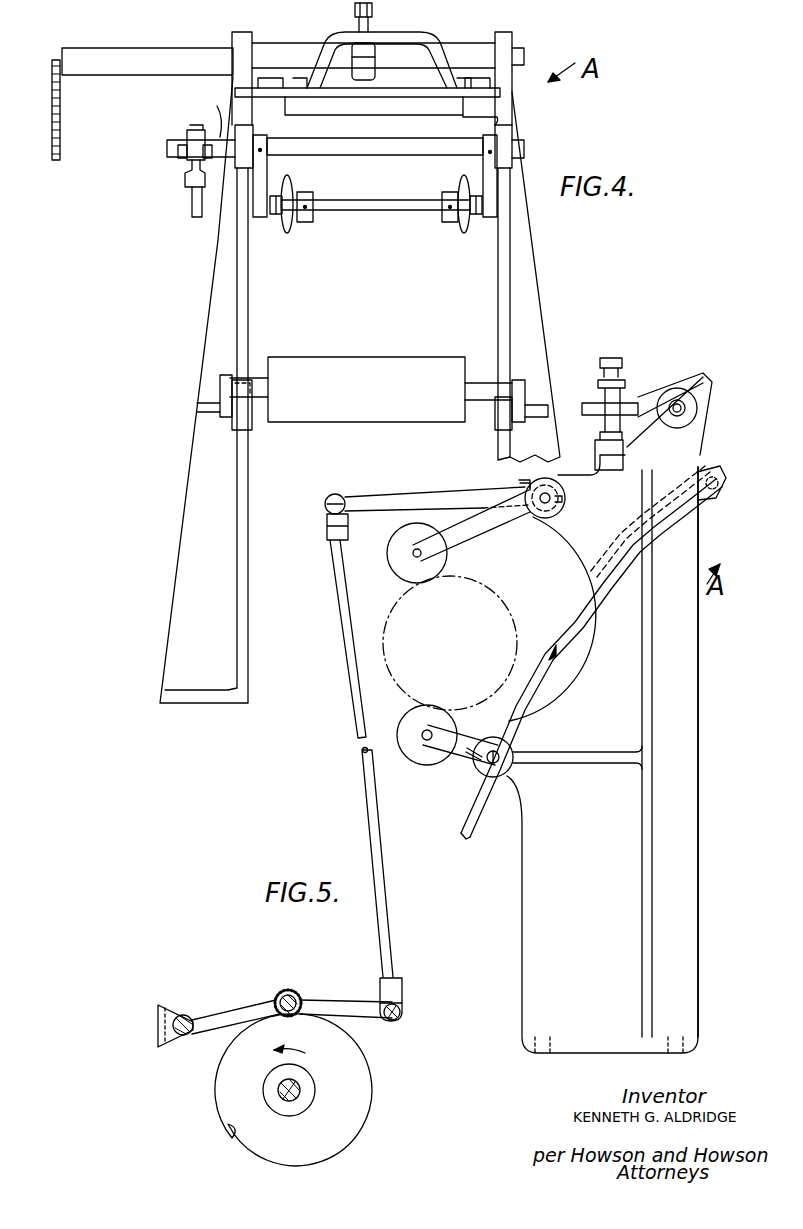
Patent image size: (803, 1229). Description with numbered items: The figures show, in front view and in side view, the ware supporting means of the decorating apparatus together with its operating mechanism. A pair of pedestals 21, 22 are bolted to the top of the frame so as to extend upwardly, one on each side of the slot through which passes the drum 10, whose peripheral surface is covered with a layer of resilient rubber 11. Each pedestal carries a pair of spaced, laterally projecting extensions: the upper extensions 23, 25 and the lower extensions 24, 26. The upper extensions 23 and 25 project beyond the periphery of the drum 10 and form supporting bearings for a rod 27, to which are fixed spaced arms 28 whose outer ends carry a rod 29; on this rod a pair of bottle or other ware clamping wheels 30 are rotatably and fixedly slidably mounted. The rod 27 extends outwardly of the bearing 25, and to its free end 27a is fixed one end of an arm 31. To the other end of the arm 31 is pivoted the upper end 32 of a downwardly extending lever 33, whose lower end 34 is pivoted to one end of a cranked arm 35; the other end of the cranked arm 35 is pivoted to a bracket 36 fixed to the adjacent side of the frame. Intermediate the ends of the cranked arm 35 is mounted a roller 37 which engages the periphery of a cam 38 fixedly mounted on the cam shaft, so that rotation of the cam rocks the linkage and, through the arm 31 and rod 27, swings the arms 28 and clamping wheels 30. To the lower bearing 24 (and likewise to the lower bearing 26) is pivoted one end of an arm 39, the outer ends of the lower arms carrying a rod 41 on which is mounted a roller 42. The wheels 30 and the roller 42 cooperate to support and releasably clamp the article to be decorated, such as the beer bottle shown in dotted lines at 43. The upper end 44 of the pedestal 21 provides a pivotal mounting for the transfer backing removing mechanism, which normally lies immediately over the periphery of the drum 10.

In FIG. 5, the drum 10 is at (686, 513).
In FIG. 5, the layer of resilient rubber 11 is at (613, 545).
In FIG. 4, the pedestal 21 is at (528, 243).
In FIG. 5, the pedestal 21 is at (688, 677).
In FIG. 4, the pedestal 22 is at (215, 270).
In FIG. 4, the upper extension 23 is at (505, 137).
In FIG. 5, the upper extension 23 is at (545, 518).
In FIG. 4, the lower extension 24 is at (503, 420).
In FIG. 5, the lower extension 24 is at (493, 778).
In FIG. 4, the upper extension 25 is at (246, 133).
In FIG. 4, the lower extension 26 is at (243, 405).
In FIG. 4, the rod 27 is at (400, 143).
In FIG. 4, the free end of rod 27a is at (231, 107).
In FIG. 4, the spaced arms 28 is at (265, 175).
In FIG. 5, the spaced arms 28 is at (475, 534).
In FIG. 4, the rod 29 is at (393, 203).
In FIG. 4, the ware clamping wheels 30 is at (292, 231).
In FIG. 5, the ware clamping wheels 30 is at (404, 569).
In FIG. 4, the arm 31 is at (187, 140).
In FIG. 5, the arm 31 is at (417, 497).
In FIG. 4, the upper end of lever 32 is at (188, 178).
In FIG. 5, the upper end of lever 32 is at (325, 510).
In FIG. 4, the lever 33 is at (194, 207).
In FIG. 5, the lever 33 is at (360, 752).
In FIG. 5, the lower end of lever 34 is at (398, 985).
In FIG. 5, the cranked arm 35 is at (307, 1003).
In FIG. 5, the bracket 36 is at (173, 1012).
In FIG. 5, the roller 37 is at (310, 1012).
In FIG. 5, the cam 38 is at (228, 1066).
In FIG. 4, the arm 39 is at (520, 395).
In FIG. 5, the arm 39 is at (454, 760).
In FIG. 4, the rod 41 is at (478, 382).
In FIG. 5, the rod 41 is at (422, 740).
In FIG. 4, the roller 42 is at (338, 358).
In FIG. 5, the roller 42 is at (410, 716).
In FIG. 5, the beer bottle 43 is at (505, 620).
In FIG. 4, the upper end of pedestal 44 is at (670, 390).